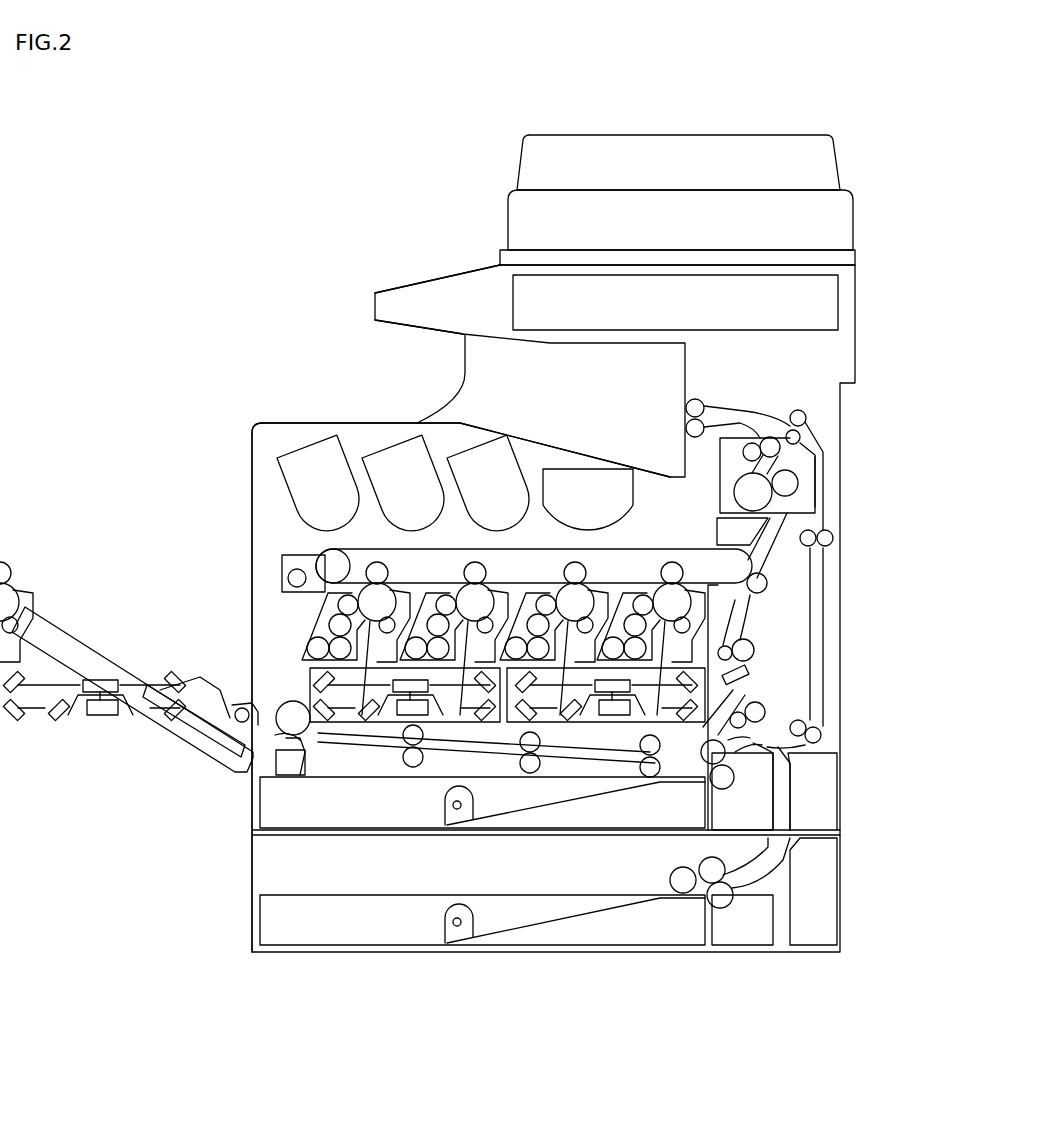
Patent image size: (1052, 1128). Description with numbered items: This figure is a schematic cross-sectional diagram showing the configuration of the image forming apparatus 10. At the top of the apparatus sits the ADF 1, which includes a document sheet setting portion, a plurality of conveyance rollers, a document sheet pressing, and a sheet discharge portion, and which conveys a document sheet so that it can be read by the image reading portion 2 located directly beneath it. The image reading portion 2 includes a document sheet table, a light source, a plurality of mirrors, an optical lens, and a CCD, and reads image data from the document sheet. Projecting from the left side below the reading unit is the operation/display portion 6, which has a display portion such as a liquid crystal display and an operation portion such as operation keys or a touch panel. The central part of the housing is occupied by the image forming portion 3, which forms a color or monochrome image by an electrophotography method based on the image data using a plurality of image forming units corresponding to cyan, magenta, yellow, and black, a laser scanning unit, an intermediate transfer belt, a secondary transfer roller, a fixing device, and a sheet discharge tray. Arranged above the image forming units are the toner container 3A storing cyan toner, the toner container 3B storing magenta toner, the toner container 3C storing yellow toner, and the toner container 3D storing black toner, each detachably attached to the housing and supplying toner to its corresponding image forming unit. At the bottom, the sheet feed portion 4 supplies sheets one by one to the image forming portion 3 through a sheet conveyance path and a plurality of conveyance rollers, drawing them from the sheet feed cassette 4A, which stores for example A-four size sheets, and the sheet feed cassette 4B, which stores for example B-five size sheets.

The image forming apparatus 10 is at (237, 186).
The ADF 1 is at (857, 181).
The image reading portion 2 is at (857, 305).
The operation/display portion 6 is at (405, 279).
The image forming portion 3 is at (254, 449).
The toner container 3A is at (313, 440).
The toner container 3B is at (398, 440).
The toner container 3C is at (483, 440).
The toner container 3D is at (587, 468).
The sheet feed portion 4 is at (777, 663).
The sheet feed cassette 4A is at (260, 795).
The sheet feed cassette 4B is at (260, 912).